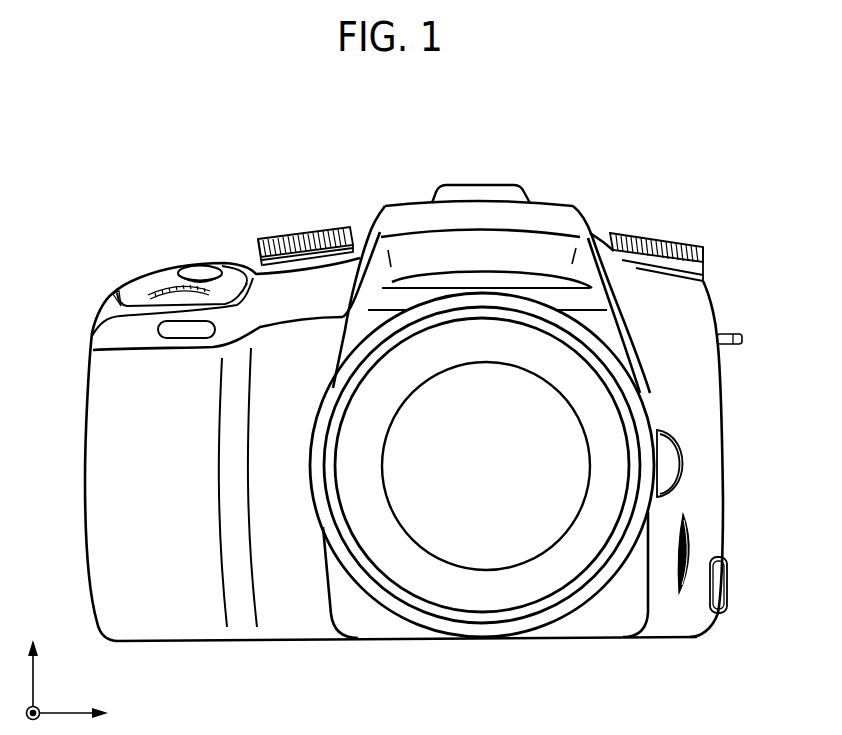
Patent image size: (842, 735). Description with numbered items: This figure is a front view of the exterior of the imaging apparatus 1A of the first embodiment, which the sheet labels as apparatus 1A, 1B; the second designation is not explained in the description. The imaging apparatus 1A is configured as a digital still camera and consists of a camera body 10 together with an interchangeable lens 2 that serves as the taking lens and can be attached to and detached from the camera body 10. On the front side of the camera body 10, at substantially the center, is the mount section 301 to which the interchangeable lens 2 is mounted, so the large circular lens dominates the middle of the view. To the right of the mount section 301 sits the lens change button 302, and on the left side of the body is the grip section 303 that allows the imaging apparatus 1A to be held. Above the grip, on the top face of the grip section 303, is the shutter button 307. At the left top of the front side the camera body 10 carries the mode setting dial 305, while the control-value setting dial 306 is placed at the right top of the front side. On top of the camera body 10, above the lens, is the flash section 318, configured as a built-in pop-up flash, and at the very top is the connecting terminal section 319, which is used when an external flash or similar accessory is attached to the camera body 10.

The imaging apparatus 1A is at (388, 435).
The image pickup apparatus 1B is at (221, 122).
The camera body 10 is at (125, 240).
The interchangeable lens 2 is at (567, 497).
The mount section 301 is at (598, 630).
The lens change button 302 is at (672, 465).
The grip section 303 is at (96, 490).
The mode setting dial 305 is at (303, 234).
The control-value setting dial 306 is at (655, 235).
The shutter button 307 is at (201, 265).
The flash section 318 is at (377, 188).
The connecting terminal section 319 is at (484, 188).